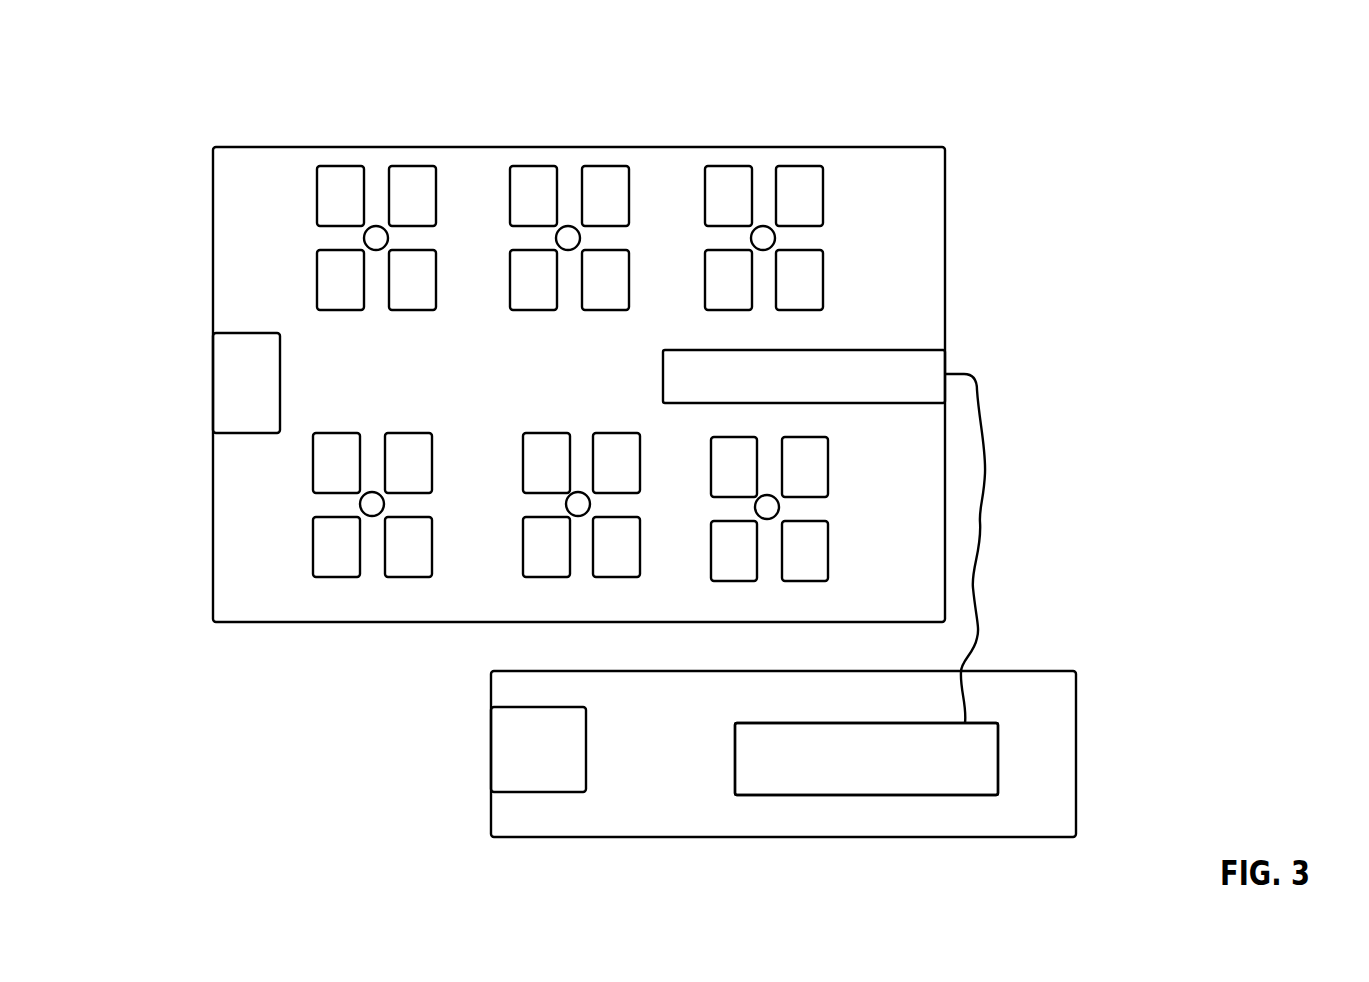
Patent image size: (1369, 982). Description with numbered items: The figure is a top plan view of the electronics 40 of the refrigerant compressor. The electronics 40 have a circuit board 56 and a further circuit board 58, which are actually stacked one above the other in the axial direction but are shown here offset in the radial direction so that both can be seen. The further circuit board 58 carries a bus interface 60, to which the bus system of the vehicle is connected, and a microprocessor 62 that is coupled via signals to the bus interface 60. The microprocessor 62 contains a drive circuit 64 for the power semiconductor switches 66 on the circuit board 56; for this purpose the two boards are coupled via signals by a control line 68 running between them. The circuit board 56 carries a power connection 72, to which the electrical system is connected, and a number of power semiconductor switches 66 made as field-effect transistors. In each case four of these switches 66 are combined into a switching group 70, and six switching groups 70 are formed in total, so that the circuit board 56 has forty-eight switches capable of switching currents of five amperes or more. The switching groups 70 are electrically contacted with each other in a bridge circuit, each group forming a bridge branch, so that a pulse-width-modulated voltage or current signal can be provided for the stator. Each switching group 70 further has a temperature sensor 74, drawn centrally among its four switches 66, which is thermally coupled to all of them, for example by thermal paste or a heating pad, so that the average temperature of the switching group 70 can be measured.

The electronics 40 is at (150, 184).
The circuit board 56 is at (237, 507).
The further circuit board 58 is at (656, 823).
The bus interface 60 is at (546, 762).
The microprocessor 62 is at (817, 783).
The drive circuit 64 is at (928, 783).
The power semiconductor switches 66 is at (328, 206).
The control line 68 is at (976, 423).
The switching group 70 is at (378, 126).
The power connection 72 is at (232, 394).
The temperature sensor 74 is at (762, 226).